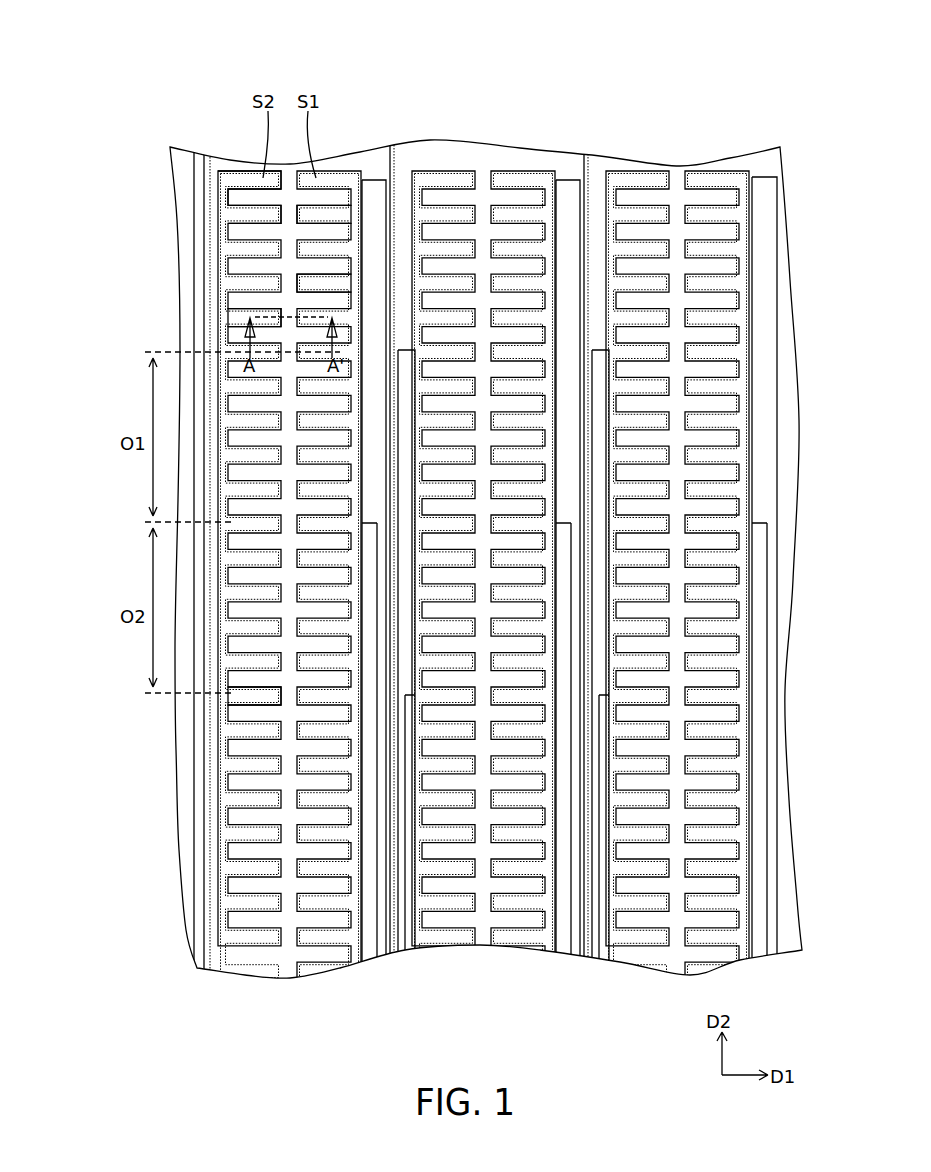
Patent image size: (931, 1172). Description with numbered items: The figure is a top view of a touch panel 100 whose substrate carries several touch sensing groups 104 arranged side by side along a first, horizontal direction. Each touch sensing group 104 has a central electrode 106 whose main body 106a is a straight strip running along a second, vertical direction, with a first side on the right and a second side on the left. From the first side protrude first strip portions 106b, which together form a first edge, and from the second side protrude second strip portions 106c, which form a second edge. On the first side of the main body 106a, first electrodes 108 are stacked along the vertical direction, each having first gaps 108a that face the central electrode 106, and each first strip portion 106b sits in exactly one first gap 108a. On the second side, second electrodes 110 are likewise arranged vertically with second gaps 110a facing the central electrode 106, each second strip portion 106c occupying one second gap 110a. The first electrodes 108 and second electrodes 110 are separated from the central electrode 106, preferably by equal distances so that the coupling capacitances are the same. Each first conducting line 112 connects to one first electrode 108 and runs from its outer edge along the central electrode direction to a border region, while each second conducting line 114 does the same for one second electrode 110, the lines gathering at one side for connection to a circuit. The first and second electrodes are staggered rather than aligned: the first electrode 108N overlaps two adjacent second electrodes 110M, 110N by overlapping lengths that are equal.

The touch panel 100 is at (202, 71).
The touch sensing group 104 is at (489, 556).
The central electrode 106 is at (484, 556).
The main body 106a is at (484, 552).
The first strip portion 106b is at (519, 232).
The second strip portion 106c is at (457, 232).
The first electrode 108 is at (551, 195).
The first gap 108a is at (355, 218).
The first electrode 108N is at (343, 387).
The second electrode 110 is at (429, 205).
The second gap 110a is at (247, 210).
The second electrode 110M is at (247, 320).
The second electrode 110N is at (228, 695).
The first conducting line 112 is at (384, 942).
The second conducting line 114 is at (197, 862).